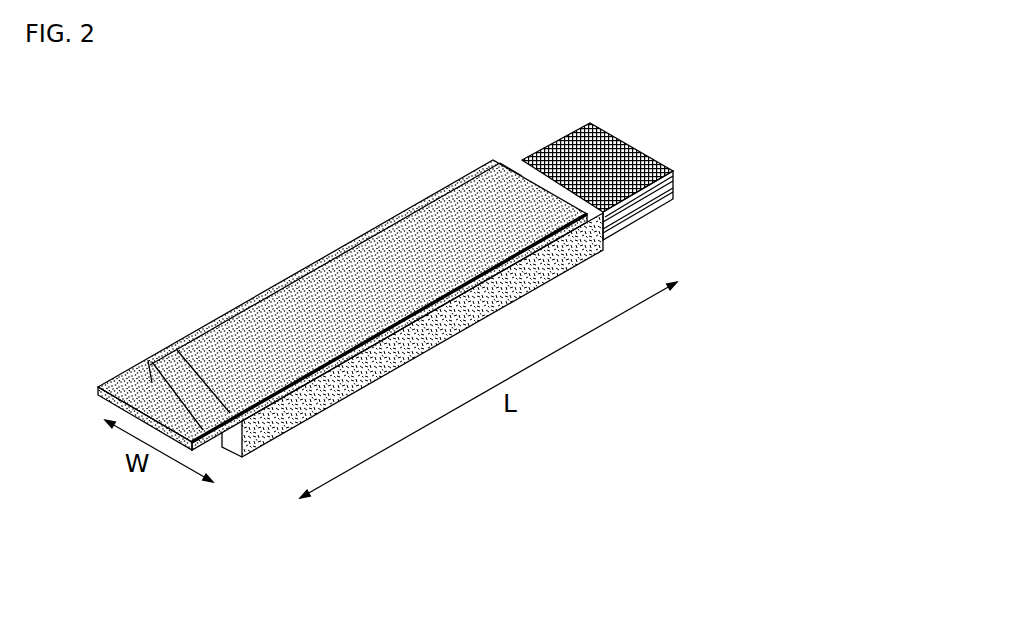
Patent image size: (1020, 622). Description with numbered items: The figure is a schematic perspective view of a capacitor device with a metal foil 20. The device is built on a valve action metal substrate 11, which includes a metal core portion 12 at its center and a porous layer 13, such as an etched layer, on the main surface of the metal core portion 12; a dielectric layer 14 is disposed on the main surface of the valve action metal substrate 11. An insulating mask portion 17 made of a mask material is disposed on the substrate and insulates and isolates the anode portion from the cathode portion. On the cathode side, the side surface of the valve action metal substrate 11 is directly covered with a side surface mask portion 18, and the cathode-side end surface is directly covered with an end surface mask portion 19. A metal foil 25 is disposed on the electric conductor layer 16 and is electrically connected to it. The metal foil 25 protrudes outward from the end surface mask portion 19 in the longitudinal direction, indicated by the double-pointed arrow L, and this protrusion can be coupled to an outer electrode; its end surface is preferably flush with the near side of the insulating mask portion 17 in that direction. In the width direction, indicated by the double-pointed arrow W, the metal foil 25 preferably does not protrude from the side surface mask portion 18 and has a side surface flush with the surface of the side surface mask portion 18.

The valve action metal substrate 11 is at (624, 151).
The metal core portion 12 is at (673, 194).
The porous layer 13 is at (673, 174).
The dielectric layer 14 is at (565, 152).
The electric conductor layer 16 is at (262, 325).
The insulating mask portion 17 is at (512, 165).
The side surface mask portion 18 is at (370, 372).
The end surface mask portion 19 is at (228, 450).
The capacitor device with a metal foil 20 is at (300, 219).
The metal foil 25 is at (135, 382).